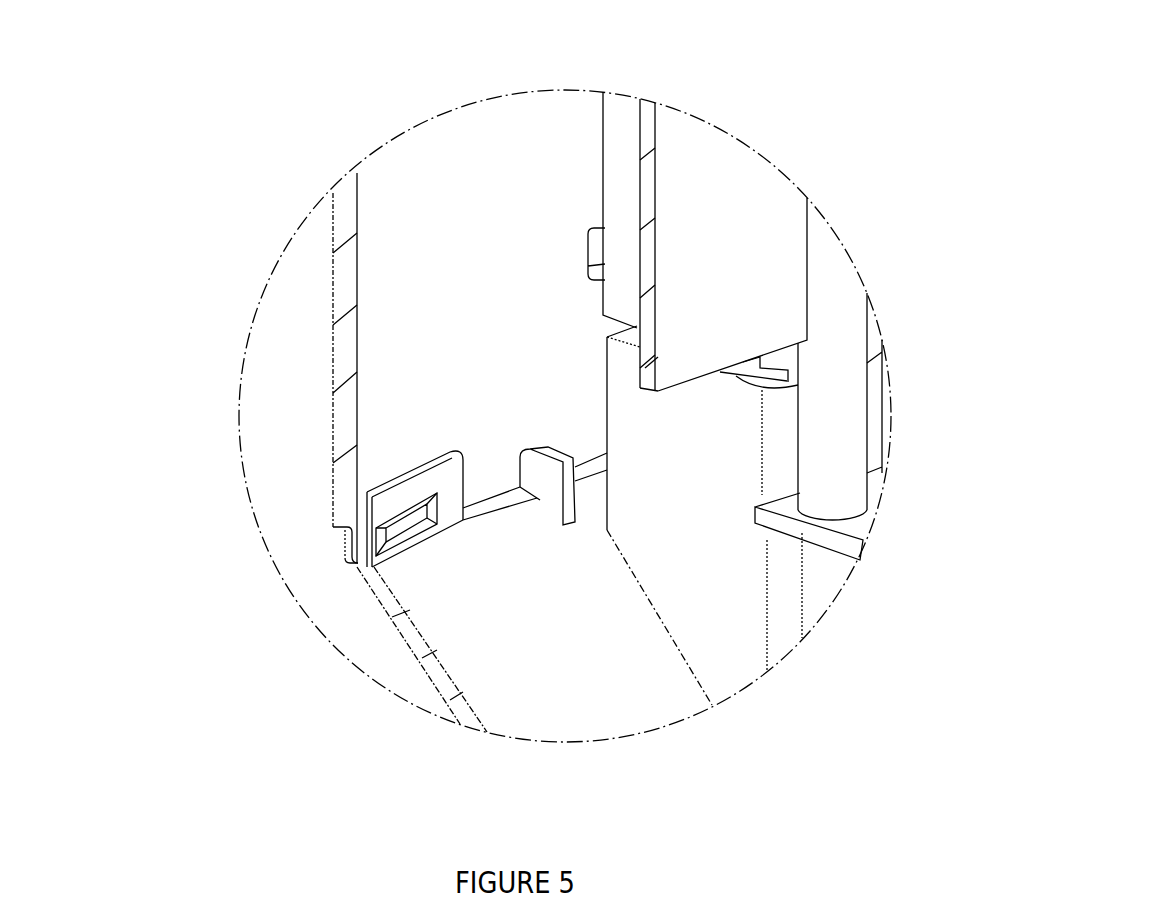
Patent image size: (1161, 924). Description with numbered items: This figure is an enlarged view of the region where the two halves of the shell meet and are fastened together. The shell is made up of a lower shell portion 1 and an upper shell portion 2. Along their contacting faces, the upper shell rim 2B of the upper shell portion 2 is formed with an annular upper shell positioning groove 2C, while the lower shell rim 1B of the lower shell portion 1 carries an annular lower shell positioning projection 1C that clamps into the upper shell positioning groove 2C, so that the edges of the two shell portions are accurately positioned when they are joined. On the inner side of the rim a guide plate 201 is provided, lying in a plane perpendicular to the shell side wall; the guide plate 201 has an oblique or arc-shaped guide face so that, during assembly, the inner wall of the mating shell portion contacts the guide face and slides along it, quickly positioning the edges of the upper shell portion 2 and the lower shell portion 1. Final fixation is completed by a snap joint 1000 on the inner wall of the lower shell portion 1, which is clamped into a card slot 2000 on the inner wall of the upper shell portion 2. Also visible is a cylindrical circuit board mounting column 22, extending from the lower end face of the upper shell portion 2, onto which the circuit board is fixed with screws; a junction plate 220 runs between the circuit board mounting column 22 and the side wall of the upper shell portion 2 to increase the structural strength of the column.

The lower shell portion 1 is at (483, 623).
The upper shell portion 2 is at (370, 417).
The circuit board mounting column 22 is at (837, 347).
The junction plate 220 is at (707, 223).
The guide plate 201 is at (548, 475).
The snap joint 1000 is at (397, 527).
The card slot 2000 is at (393, 493).
The lower shell rim 1B is at (348, 565).
The lower shell positioning projection 1C is at (353, 542).
The upper shell rim 2B is at (340, 543).
The upper shell positioning groove 2C is at (343, 533).